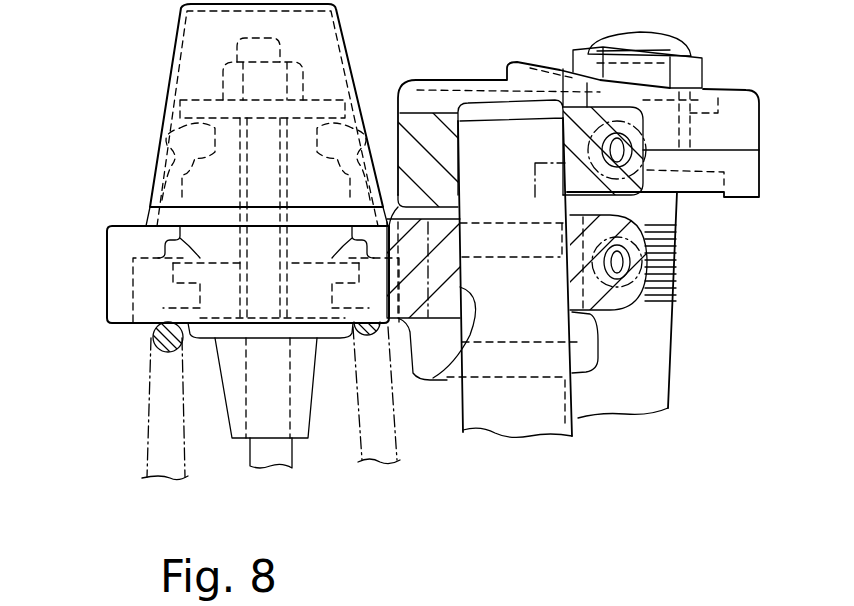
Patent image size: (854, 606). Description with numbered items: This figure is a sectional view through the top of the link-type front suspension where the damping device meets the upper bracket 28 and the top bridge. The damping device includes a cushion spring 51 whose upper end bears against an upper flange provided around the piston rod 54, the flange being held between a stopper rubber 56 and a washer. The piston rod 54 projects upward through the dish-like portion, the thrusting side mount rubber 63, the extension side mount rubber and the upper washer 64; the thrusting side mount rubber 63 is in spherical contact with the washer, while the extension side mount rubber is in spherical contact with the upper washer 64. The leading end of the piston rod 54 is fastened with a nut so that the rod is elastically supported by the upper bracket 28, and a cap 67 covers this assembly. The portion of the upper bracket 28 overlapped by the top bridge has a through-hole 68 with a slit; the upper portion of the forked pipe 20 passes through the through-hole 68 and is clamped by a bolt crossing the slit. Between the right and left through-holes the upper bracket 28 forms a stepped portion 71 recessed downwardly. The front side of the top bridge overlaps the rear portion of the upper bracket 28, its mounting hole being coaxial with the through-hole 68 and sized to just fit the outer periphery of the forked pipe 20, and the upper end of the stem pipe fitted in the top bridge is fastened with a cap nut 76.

The forked pipe 20 is at (517, 417).
The upper bracket 28 is at (110, 227).
The cushion spring 51 is at (148, 438).
The piston rod 54 is at (282, 453).
The stopper rubber 56 is at (238, 383).
The thrusting side mount rubber 63 is at (747, 137).
The upper washer 64 is at (663, 350).
The cap 67 is at (167, 93).
The through-hole 68 is at (462, 330).
The stepped portion 71 is at (597, 363).
The cap nut 76 is at (667, 43).